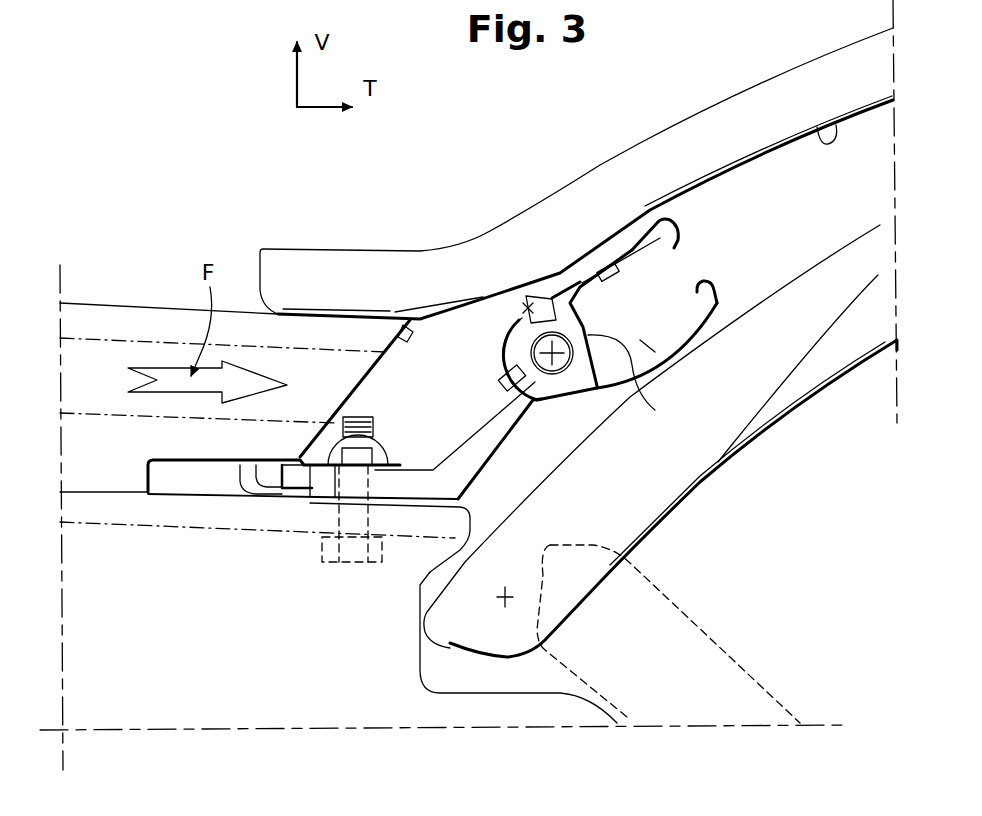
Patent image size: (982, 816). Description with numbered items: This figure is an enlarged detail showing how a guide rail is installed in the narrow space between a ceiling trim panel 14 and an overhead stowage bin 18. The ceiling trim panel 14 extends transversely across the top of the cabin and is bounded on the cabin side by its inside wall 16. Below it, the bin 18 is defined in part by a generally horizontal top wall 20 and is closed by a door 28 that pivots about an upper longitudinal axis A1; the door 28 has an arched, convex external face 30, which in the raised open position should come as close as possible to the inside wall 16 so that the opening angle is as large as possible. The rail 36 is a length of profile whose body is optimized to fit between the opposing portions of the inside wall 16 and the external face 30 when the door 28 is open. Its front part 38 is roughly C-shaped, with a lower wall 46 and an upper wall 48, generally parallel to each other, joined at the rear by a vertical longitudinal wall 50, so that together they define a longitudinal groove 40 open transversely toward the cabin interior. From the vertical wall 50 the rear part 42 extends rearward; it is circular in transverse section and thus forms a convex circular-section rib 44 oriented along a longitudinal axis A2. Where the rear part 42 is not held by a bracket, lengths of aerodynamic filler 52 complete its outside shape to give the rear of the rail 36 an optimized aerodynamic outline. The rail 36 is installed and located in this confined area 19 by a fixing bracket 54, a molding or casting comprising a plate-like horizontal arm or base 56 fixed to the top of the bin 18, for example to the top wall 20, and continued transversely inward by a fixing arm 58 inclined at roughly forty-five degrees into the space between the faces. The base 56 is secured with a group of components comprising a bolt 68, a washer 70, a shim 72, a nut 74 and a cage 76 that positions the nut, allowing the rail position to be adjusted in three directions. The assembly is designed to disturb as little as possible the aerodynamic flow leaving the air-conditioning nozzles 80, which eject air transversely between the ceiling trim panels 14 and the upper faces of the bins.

The ceiling trim panel 14 is at (593, 200).
The inside wall 16 is at (815, 140).
The stowage bin 18 is at (338, 663).
The area 19 is at (612, 318).
The top wall 20 is at (173, 513).
The door 28 is at (726, 472).
The external face 30 is at (815, 252).
The rail 36 is at (729, 277).
The front part 38 is at (725, 329).
The longitudinal groove 40 is at (695, 258).
The rear part 42 is at (565, 385).
The longitudinal rib 44 is at (527, 307).
The lower wall 46 is at (700, 355).
The upper wall 48 is at (561, 290).
The vertical longitudinal wall 50 is at (650, 345).
The aerodynamic filler 52 is at (527, 306).
The fixing bracket 54 is at (433, 455).
The horizontal arm 56 is at (407, 483).
The fixing arm 58 is at (488, 437).
The bolt 68 is at (358, 565).
The washer 70 is at (305, 540).
The shim 72 is at (322, 500).
The nut 74 is at (380, 455).
The cage 76 is at (256, 494).
The air-conditioning nozzle 80 is at (101, 294).
The upper longitudinal axis A1 is at (513, 597).
The longitudinal axis of the rib A2 is at (553, 374).